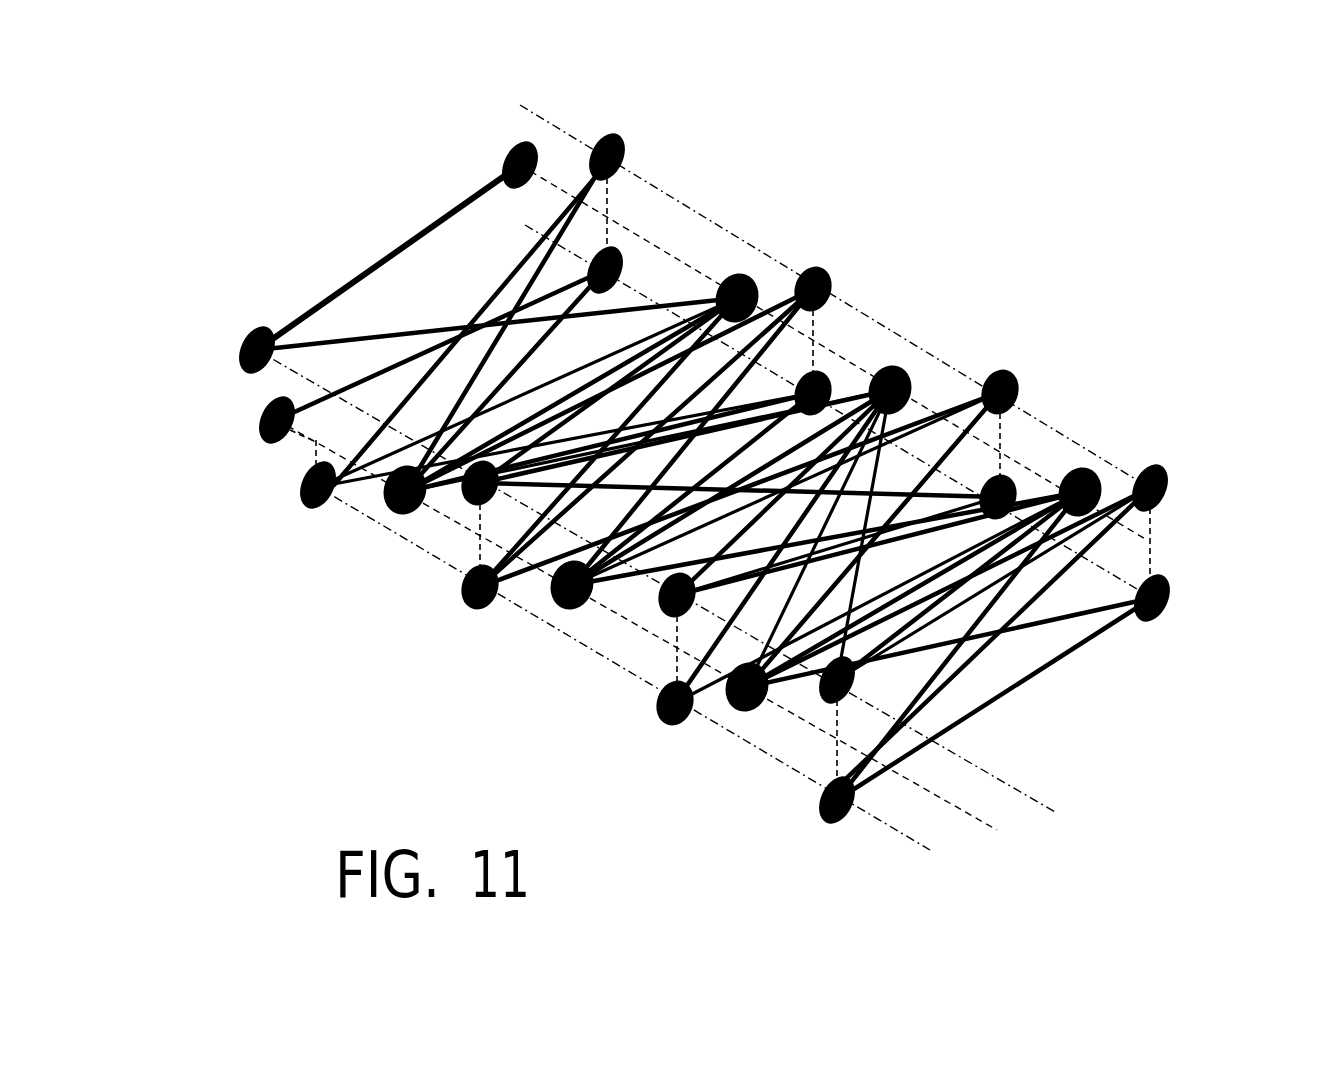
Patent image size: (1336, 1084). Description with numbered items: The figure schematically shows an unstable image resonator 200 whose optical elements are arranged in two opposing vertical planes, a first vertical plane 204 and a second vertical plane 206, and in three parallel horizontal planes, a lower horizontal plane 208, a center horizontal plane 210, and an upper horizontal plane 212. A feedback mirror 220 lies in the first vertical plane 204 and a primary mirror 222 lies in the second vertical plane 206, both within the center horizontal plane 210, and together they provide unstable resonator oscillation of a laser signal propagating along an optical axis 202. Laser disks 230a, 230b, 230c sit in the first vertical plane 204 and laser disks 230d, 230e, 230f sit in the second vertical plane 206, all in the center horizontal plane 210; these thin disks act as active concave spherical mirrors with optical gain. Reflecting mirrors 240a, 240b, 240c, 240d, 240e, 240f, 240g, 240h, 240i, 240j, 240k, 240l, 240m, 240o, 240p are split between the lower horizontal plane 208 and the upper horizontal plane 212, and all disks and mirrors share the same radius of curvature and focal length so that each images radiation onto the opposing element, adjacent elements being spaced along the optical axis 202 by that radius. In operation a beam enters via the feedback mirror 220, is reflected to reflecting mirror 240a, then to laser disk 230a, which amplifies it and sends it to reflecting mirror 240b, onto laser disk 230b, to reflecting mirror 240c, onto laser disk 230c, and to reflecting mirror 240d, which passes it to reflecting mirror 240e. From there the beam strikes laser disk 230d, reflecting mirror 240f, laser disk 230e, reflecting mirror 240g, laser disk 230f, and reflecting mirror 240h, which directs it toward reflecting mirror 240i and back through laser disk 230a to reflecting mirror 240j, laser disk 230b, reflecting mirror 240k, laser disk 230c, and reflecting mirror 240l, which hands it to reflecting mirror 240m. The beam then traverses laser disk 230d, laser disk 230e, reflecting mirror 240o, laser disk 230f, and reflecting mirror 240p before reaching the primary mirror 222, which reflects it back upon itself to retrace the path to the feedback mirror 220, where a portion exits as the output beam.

The unstable image resonator 200 is at (214, 134).
The optical axis 202 is at (347, 342).
The first vertical plane 204 is at (1145, 551).
The second vertical plane 206 is at (316, 460).
The lower horizontal plane 208 is at (912, 838).
The center horizontal plane 210 is at (958, 810).
The upper horizontal plane 212 is at (1013, 780).
The feedback mirror 220 is at (515, 147).
The primary mirror 222 is at (270, 432).
The laser disk 230a is at (740, 284).
The laser disk 230b is at (893, 376).
The laser disk 230c is at (1085, 478).
The laser disk 230d is at (742, 702).
The laser disk 230e is at (570, 604).
The laser disk 230f is at (400, 510).
The reflecting mirror 240a is at (252, 362).
The reflecting mirror 240b is at (478, 605).
The reflecting mirror 240c is at (674, 612).
The reflecting mirror 240d is at (836, 808).
The reflecting mirror 240e is at (1158, 606).
The reflecting mirror 240f is at (1003, 380).
The reflecting mirror 240g is at (820, 380).
The reflecting mirror 240h is at (611, 146).
The reflecting mirror 240i is at (314, 500).
The reflecting mirror 240j is at (478, 500).
The reflecting mirror 240k is at (670, 715).
The reflecting mirror 240l is at (838, 693).
The reflecting mirror 240m is at (1155, 478).
The reflecting mirror 240o is at (818, 276).
The reflecting mirror 240p is at (612, 252).